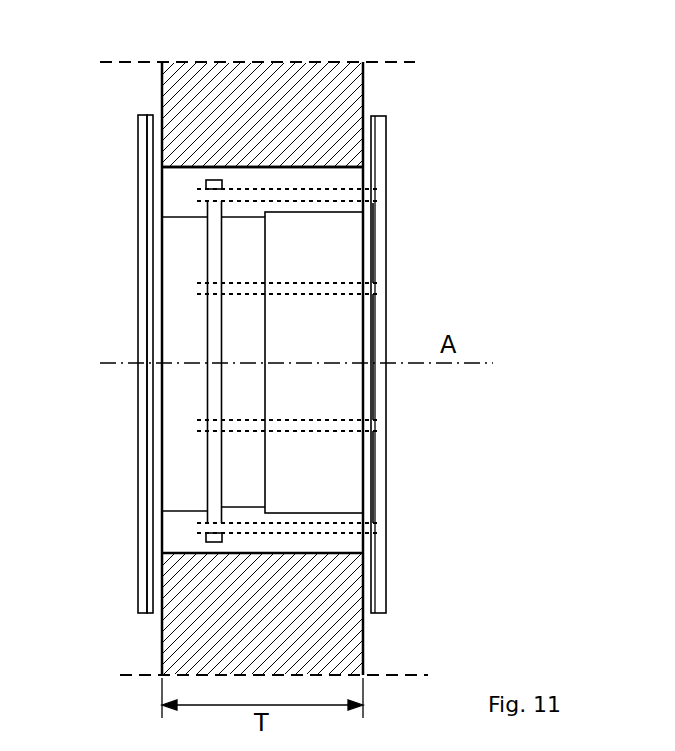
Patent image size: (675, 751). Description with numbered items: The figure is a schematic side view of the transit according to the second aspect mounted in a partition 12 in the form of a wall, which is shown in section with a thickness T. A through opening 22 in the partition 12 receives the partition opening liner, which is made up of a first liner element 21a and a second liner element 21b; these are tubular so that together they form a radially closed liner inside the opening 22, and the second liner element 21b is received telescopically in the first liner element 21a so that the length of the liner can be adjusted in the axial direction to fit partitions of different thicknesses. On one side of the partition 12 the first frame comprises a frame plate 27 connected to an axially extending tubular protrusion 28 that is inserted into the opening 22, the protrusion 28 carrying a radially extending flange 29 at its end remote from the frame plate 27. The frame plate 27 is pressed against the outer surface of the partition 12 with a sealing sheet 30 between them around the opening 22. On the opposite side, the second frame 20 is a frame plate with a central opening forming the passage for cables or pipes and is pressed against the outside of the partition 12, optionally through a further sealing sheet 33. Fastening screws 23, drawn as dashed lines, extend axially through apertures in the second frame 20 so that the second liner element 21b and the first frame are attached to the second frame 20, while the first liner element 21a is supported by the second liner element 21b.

The partition 12 is at (172, 88).
The second frame 20 is at (386, 137).
The first liner element 21a is at (240, 483).
The second liner element 21b is at (353, 483).
The through opening 22 is at (300, 164).
The fastening screws 23 is at (377, 288).
The frame plate 27 is at (147, 187).
The tubular protrusion 28 is at (182, 333).
The flange 29 is at (213, 397).
The sealing sheet 30 is at (153, 253).
The sealing sheet 33 is at (368, 228).